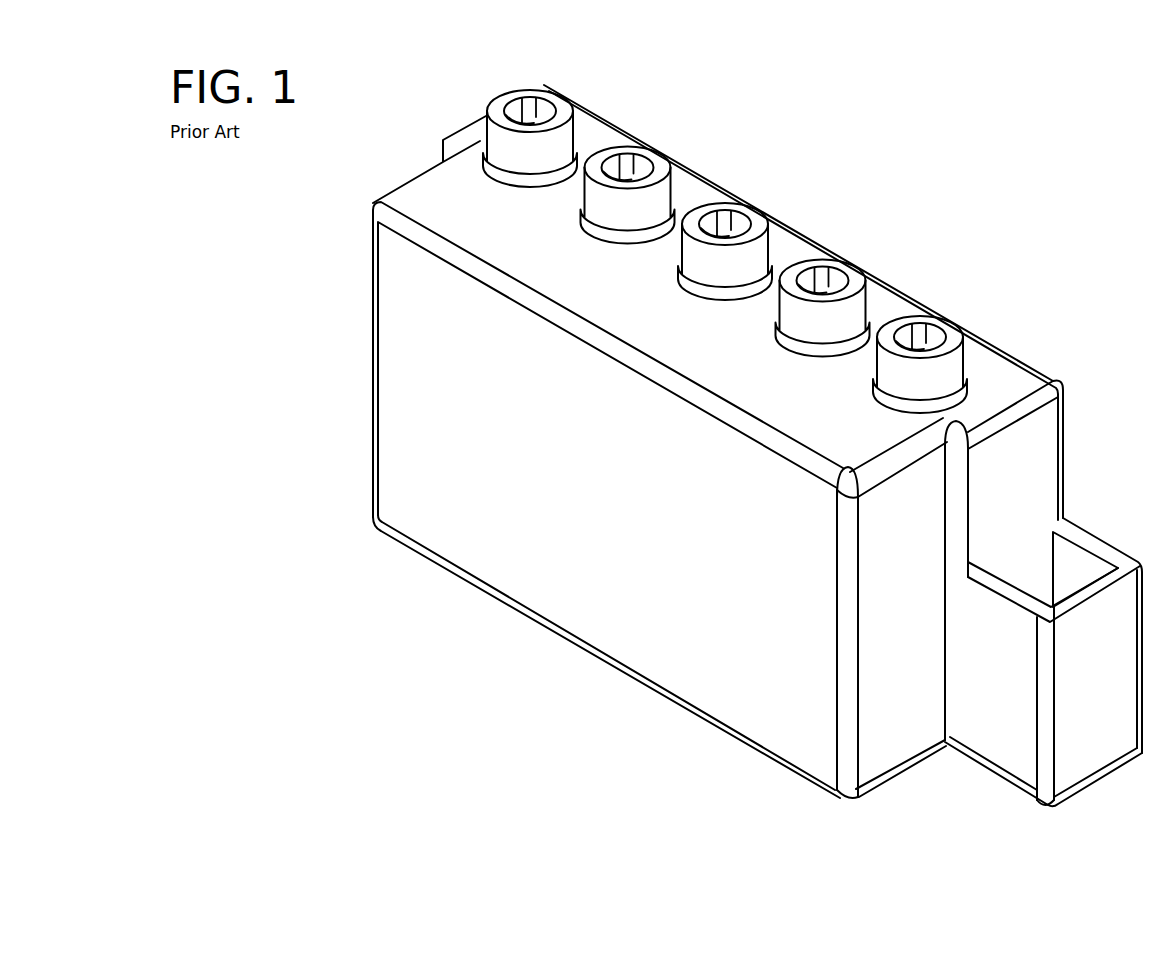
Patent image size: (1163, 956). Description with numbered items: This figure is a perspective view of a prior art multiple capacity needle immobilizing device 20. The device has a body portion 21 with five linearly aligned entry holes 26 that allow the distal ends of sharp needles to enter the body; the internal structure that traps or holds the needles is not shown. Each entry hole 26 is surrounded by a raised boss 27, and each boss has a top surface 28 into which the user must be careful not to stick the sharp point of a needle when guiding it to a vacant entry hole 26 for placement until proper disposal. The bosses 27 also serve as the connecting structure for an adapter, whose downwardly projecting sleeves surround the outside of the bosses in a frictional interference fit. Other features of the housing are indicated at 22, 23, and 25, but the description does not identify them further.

The needle immobilizing device 20 is at (366, 647).
The body portion 21 is at (560, 587).
The top wall of housing 22 is at (1007, 373).
The bottom edge of housing 23 is at (663, 650).
The mounting bracket 25 is at (895, 728).
The entry holes 26 is at (720, 227).
The raised boss 27 is at (813, 268).
The top surface 28 is at (509, 96).